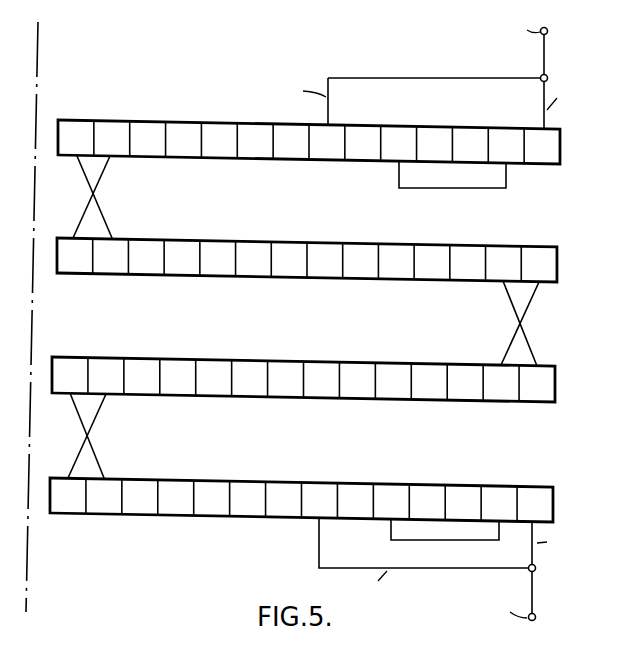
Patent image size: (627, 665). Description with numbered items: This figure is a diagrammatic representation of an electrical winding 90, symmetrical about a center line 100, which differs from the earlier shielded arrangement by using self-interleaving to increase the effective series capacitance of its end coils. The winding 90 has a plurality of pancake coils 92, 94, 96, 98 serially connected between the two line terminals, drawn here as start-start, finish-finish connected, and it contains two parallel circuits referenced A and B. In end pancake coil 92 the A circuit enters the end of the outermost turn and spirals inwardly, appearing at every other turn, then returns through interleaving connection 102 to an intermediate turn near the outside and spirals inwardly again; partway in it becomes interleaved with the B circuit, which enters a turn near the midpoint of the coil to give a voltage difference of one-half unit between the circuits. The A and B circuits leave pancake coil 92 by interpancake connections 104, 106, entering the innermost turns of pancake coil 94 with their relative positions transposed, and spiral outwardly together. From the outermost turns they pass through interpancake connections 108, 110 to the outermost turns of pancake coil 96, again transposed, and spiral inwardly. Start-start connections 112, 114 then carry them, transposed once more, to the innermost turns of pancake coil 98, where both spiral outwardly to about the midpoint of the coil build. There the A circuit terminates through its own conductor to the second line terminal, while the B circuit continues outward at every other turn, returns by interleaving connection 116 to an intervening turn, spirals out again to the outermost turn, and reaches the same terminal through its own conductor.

The center line 100 is at (40, 42).
The electrical winding 90 is at (308, 61).
The pancake coil 92 is at (600, 157).
The pancake coil 94 is at (600, 276).
The pancake coil 96 is at (600, 394).
The pancake coil 98 is at (600, 514).
The interleaving connection 102 is at (421, 190).
The interpancake connection 104 is at (86, 178).
The interpancake connection 106 is at (102, 179).
The interpancake connection 108 is at (508, 338).
The interpancake connection 110 is at (533, 338).
The start-start connection 112 is at (82, 420).
The start-start connection 114 is at (90, 420).
The interleaving connection 116 is at (412, 542).